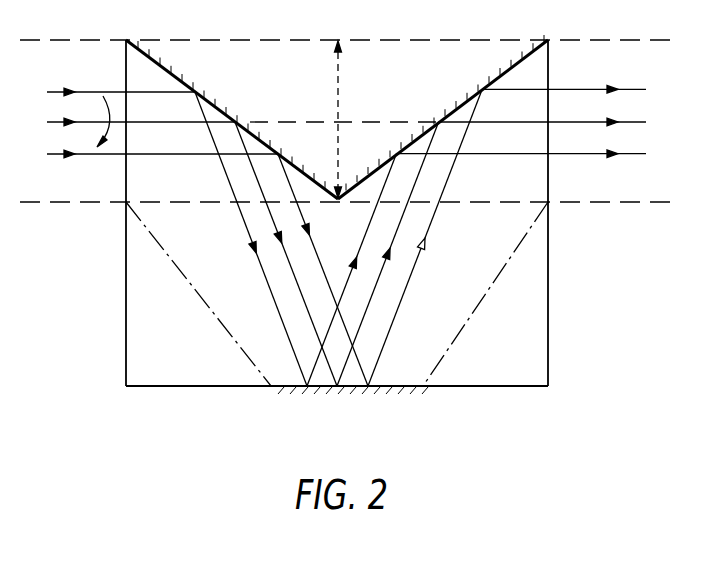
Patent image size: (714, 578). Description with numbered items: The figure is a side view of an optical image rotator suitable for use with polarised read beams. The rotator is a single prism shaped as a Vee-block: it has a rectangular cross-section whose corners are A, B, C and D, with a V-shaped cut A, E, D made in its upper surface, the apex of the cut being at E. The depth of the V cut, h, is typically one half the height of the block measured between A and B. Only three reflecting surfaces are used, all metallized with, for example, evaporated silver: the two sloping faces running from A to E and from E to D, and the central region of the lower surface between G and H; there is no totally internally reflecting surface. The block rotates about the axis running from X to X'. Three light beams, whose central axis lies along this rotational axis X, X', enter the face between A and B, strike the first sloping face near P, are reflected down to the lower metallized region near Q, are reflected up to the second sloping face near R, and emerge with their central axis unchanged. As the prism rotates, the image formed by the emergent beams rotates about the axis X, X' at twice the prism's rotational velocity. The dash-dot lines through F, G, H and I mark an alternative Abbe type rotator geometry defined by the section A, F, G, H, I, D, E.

The upper left corner of rectangular cross-section A is at (228, 107).
The lower left corner of rectangular cross-section B is at (119, 227).
The lower right corner of rectangular cross-section C is at (548, 227).
The upper right corner of rectangular cross-section D is at (446, 107).
The apex of V-shaped cut E is at (350, 213).
The left vertex of Abbe rotator section F is at (190, 294).
The left end of metallized central lower region G is at (299, 401).
The right end of metallized central lower region H is at (391, 400).
The right vertex of Abbe rotator section I is at (493, 294).
The point of incidence on left reflector P is at (281, 239).
The point of reflection on bottom surface Q is at (337, 402).
The point of reflection on right reflector R is at (394, 237).
The rotational axis end X is at (149, 123).
The rotational axis end X' is at (533, 122).
The depth of V cut h is at (344, 119).